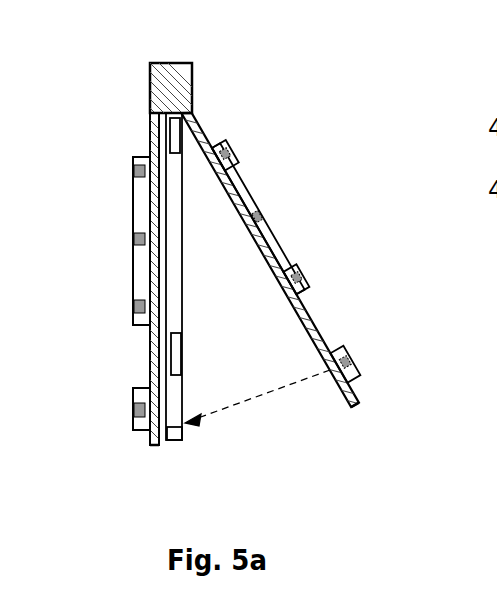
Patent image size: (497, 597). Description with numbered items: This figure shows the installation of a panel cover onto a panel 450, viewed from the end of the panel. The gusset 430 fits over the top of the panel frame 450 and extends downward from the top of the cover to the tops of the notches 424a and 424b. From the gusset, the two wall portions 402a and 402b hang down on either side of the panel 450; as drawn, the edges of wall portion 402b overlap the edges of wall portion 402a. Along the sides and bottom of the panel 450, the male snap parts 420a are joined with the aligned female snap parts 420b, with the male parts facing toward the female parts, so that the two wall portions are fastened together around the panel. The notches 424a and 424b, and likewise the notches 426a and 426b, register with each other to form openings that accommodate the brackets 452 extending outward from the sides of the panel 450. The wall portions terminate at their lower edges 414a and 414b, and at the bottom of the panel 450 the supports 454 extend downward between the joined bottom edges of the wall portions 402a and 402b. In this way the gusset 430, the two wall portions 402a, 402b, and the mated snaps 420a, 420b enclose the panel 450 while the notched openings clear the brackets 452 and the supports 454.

The gusset 430 is at (151, 72).
The brackets 452 is at (178, 132).
The notch 424a is at (157, 142).
The notch 424b is at (203, 128).
The male snap parts 420a is at (136, 172).
The female snap parts 420b is at (232, 153).
The wall portion 402a is at (137, 215).
The wall portion 402b is at (245, 203).
The notch 426a is at (157, 357).
The notch 426b is at (320, 335).
The first edge 414a is at (152, 437).
The second edge 414b is at (358, 405).
The panel 450 is at (173, 405).
The supports 454 is at (178, 440).